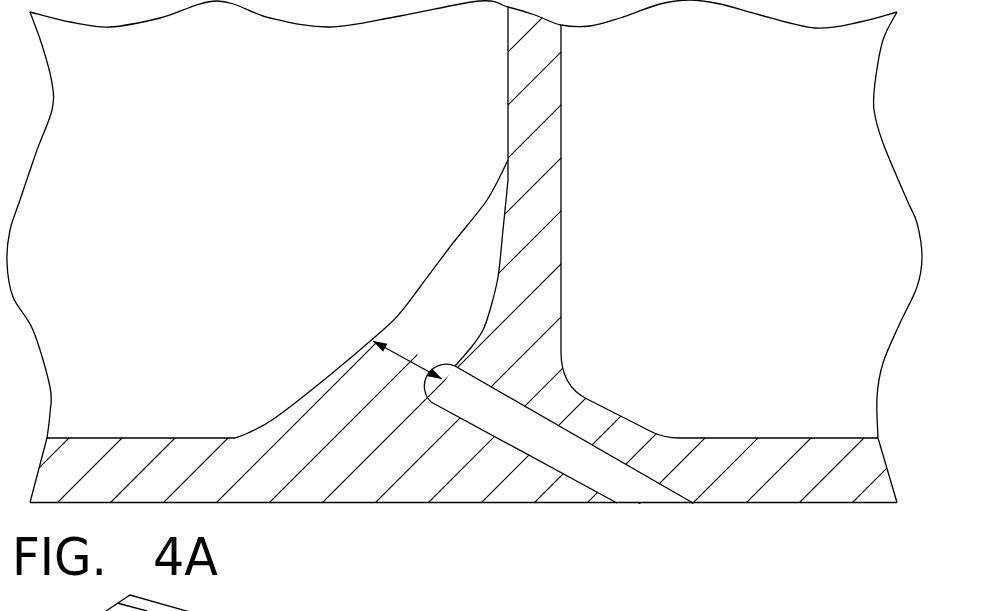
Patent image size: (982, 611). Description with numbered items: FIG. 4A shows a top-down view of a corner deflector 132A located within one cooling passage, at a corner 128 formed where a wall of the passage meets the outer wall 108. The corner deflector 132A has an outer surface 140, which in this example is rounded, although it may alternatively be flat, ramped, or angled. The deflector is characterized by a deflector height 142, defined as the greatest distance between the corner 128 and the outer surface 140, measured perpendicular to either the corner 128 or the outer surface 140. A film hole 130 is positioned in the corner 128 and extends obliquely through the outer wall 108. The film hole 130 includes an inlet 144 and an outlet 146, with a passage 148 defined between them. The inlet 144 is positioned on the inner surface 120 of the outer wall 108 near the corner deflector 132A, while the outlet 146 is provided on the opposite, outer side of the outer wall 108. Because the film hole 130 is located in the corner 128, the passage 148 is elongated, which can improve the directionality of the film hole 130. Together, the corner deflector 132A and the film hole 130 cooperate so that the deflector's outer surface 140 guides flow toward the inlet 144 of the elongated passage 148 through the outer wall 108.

The outer wall 108 is at (788, 505).
The inner surface 120 is at (137, 438).
The corner 128 is at (468, 337).
The film hole 130 is at (552, 420).
The corner deflector 132A is at (462, 256).
The outer surface 140 is at (385, 348).
The deflector height 142 is at (408, 359).
The inlet 144 is at (427, 373).
The outlet 146 is at (660, 503).
The passage 148 is at (562, 448).